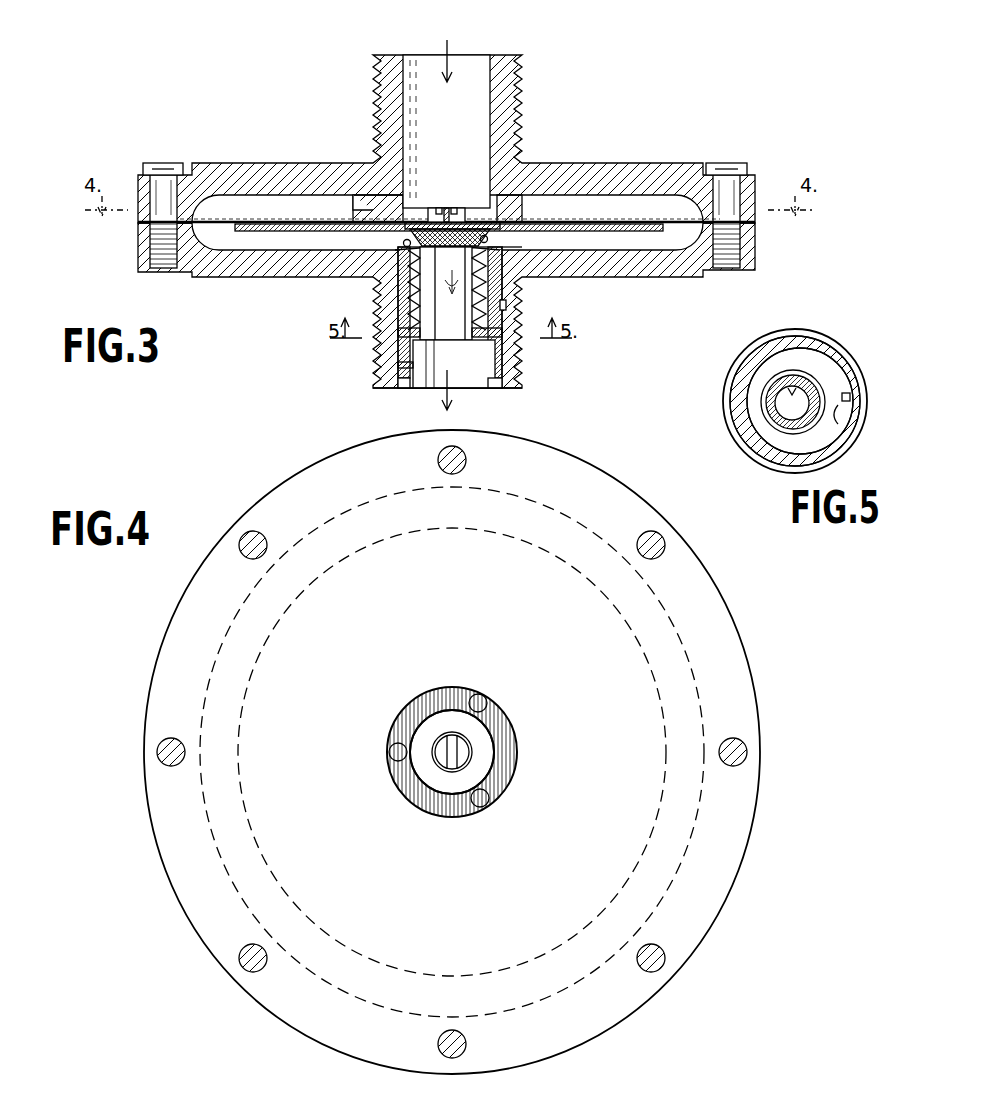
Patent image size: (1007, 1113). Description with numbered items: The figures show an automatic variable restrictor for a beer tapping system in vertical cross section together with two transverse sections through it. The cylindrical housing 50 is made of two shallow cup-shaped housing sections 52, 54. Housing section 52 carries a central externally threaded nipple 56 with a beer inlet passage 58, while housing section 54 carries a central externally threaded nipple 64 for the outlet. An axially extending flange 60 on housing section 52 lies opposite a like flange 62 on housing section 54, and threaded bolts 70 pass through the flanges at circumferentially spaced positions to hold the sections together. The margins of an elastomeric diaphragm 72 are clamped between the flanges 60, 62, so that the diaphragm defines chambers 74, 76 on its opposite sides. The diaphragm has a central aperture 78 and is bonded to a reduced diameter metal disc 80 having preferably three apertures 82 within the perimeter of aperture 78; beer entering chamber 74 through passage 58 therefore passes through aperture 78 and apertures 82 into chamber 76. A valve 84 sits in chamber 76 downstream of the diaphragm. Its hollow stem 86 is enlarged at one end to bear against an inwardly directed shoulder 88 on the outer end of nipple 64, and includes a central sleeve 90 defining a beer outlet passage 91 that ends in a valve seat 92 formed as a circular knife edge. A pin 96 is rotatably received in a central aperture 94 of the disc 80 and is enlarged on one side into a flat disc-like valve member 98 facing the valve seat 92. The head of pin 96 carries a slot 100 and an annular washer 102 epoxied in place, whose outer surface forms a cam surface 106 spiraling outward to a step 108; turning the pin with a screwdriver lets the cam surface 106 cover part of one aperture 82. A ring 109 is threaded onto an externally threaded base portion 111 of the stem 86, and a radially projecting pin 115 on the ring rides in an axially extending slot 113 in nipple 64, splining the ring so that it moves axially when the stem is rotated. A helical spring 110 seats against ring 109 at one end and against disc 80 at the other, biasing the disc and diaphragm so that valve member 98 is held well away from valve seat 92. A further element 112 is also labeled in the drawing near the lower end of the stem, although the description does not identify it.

In FIG. 3, the cylindrical housing 50 is at (286, 163).
In FIG. 3, the housing section 52 is at (634, 178).
In FIG. 3, the housing section 54 is at (640, 280).
In FIG. 3, the externally threaded nipple 56 is at (512, 75).
In FIG. 3, the beer inlet passage 58 is at (420, 75).
In FIG. 3, the axially extending flange 60 is at (745, 205).
In FIG. 3, the axially projecting flange 62 is at (756, 244).
In FIG. 3, the externally threaded nipple 64 is at (385, 385).
In FIG. 5, the externally threaded nipple 64 is at (732, 412).
In FIG. 3, the threaded bolts 70 is at (158, 163).
In FIG. 4, the threaded bolts 70 is at (262, 544).
In FIG. 3, the diaphragm 72 is at (216, 262).
In FIG. 4, the diaphragm 72 is at (268, 668).
In FIG. 3, the chamber 74 is at (228, 205).
In FIG. 3, the chamber 76 is at (254, 245).
In FIG. 3, the central aperture 78 is at (378, 200).
In FIG. 3, the disc 80 is at (300, 234).
In FIG. 4, the disc 80 is at (450, 692).
In FIG. 3, the apertures 82 is at (415, 229).
In FIG. 4, the apertures 82 is at (486, 705).
In FIG. 3, the valve 84 is at (518, 290).
In FIG. 3, the hollow stem 86 is at (466, 372).
In FIG. 3, the inwardly directed shoulder 88 is at (494, 388).
In FIG. 3, the central sleeve 90 is at (446, 293).
In FIG. 5, the central sleeve 90 is at (770, 422).
In FIG. 3, the beer outlet passage 91 is at (480, 300).
In FIG. 5, the beer outlet passage 91 is at (797, 386).
In FIG. 3, the valve seat 92 is at (428, 246).
In FIG. 3, the central aperture 94 is at (456, 208).
In FIG. 3, the pin 96 is at (442, 208).
In FIG. 4, the pin 96 is at (470, 762).
In FIG. 3, the valve member 98 is at (500, 247).
In FIG. 4, the slot 100 is at (448, 770).
In FIG. 3, the annular washer 102 is at (500, 224).
In FIG. 4, the annular washer 102 is at (480, 742).
In FIG. 4, the cam surface 106 is at (400, 735).
In FIG. 4, the step 108 is at (400, 770).
In FIG. 3, the ring 109 is at (502, 348).
In FIG. 5, the ring 109 is at (740, 381).
In FIG. 3, the helical spring 110 is at (410, 330).
In FIG. 5, the externally threaded base portion 111 is at (832, 367).
In FIG. 3, the washer 112 is at (398, 362).
In FIG. 3, the axially extending slot 113 is at (506, 306).
In FIG. 5, the axially extending slot 113 is at (850, 397).
In FIG. 5, the radially projecting pin 115 is at (845, 428).